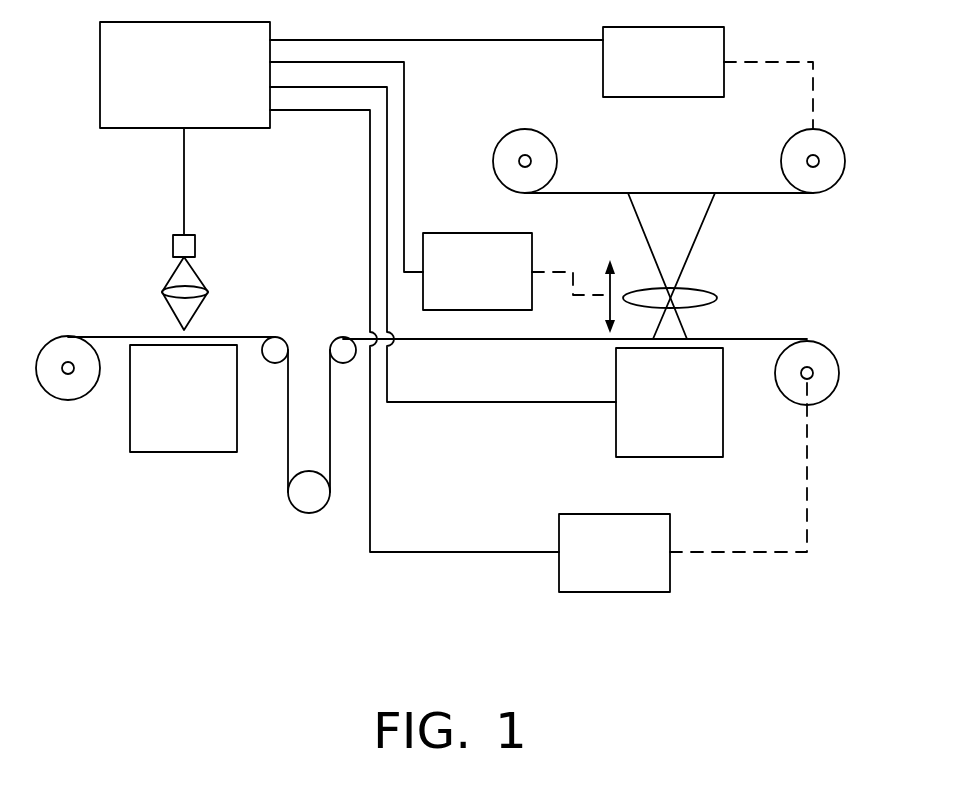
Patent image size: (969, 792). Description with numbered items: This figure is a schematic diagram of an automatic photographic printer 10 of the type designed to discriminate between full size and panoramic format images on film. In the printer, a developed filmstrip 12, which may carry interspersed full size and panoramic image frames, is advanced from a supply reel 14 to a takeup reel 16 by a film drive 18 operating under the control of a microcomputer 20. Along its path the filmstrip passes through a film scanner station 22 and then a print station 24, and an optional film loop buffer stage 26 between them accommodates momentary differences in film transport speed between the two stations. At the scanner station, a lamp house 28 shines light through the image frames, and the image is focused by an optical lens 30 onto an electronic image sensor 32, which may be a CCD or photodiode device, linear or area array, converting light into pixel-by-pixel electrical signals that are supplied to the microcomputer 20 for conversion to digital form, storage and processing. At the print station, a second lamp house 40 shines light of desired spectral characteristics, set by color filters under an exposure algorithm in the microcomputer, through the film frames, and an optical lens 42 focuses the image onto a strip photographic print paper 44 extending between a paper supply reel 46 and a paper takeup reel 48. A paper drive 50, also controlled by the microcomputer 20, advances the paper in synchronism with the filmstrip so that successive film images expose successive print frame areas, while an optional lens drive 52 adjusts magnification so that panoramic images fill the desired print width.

The automatic photographic printer 10 is at (236, 578).
The developed filmstrip 12 is at (115, 337).
The supply reel 14 is at (68, 400).
The takeup reel 16 is at (825, 400).
The film drive 18 is at (559, 580).
The microcomputer 20 is at (100, 100).
The film scanner station 22 is at (235, 311).
The print station 24 is at (741, 309).
The film loop buffer stage 26 is at (270, 465).
The lamp house 28 is at (150, 452).
The optical lens 30 is at (233, 277).
The electronic image sensor 32 is at (173, 248).
The lamp house 40 is at (616, 445).
The optical lens 42 is at (700, 290).
The strip photographic print paper 44 is at (757, 195).
The paper supply reel 46 is at (511, 133).
The paper takeup reel 48 is at (781, 162).
The paper drive 50 is at (724, 42).
The lens drive 52 is at (465, 233).